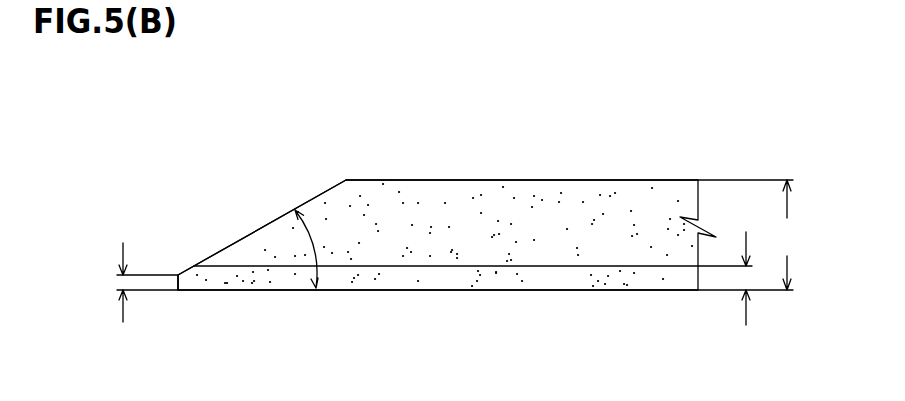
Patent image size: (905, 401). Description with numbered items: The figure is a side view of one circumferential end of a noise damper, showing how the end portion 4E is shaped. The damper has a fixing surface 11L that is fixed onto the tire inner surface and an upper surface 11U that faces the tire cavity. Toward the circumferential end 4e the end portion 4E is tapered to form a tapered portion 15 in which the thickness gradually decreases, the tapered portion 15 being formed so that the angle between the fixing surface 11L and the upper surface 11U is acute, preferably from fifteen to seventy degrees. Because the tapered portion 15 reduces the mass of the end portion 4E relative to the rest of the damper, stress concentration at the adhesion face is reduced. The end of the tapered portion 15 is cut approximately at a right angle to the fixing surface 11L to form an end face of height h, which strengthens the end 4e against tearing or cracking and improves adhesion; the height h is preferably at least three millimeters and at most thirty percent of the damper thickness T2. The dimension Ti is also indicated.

The end portion 4E is at (221, 219).
The tapered portion 15 is at (272, 220).
The upper surface 11U is at (515, 179).
The fixing surface 11L is at (473, 291).
The circumferential end 4e is at (177, 282).
The height of the end face h is at (112, 282).
The thickness T2 is at (788, 235).
The thickness of lower layer Ti is at (746, 278).